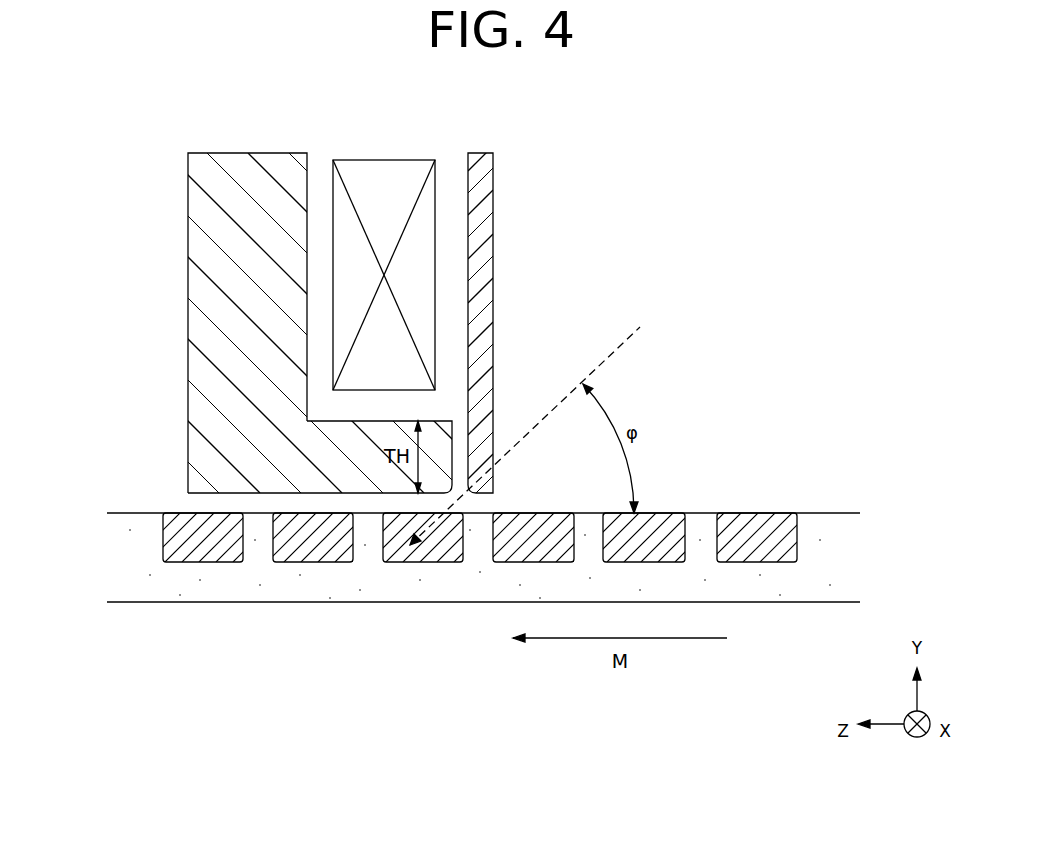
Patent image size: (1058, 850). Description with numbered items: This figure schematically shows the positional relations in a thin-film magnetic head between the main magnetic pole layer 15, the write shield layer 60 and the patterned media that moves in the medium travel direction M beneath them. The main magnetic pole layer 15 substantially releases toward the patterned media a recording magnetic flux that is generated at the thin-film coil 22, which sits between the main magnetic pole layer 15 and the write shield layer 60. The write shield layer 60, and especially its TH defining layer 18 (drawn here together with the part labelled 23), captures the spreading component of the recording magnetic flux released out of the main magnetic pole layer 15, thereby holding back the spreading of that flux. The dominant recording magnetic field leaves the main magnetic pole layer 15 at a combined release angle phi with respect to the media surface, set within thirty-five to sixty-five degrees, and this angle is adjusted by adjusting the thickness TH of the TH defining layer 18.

The write shield layer 60 is at (110, 323).
The main pole 23 is at (220, 294).
The TH defining layer 18 is at (367, 458).
The thin-film coil 22 is at (386, 165).
The main magnetic pole layer 15 is at (494, 372).